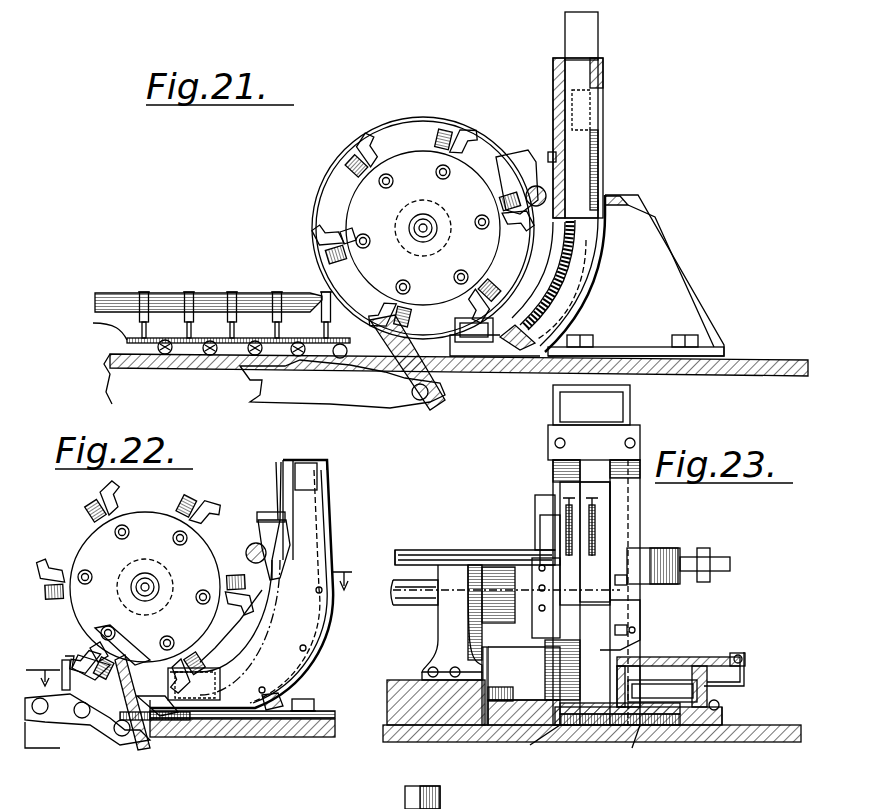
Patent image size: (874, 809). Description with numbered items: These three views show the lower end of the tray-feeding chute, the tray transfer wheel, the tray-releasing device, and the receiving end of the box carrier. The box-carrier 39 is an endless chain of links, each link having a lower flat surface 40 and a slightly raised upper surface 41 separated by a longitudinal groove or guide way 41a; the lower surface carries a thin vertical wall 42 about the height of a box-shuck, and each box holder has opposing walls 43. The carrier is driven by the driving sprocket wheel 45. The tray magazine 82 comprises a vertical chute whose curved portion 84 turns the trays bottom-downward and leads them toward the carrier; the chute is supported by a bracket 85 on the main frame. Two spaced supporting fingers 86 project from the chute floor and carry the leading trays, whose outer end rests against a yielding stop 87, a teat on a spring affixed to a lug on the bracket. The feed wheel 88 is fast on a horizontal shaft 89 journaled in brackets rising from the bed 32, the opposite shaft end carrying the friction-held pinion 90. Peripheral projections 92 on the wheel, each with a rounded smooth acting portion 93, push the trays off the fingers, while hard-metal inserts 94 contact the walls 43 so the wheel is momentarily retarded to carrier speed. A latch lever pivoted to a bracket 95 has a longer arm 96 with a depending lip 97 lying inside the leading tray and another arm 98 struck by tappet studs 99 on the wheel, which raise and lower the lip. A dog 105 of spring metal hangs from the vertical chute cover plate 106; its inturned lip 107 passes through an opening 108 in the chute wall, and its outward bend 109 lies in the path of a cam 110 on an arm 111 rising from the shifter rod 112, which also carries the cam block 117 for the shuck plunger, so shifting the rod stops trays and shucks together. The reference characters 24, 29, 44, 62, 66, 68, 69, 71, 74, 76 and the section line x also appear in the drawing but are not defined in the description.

In FIG. 22, the direction arrow 24 is at (194, 617).
In FIG. 23, the base block 29 is at (569, 725).
In FIG. 21, the bed 32 is at (108, 355).
In FIG. 22, the bed 32 is at (300, 737).
In FIG. 23, the bed 32 is at (415, 742).
In FIG. 21, the box-carrier 39 is at (108, 326).
In FIG. 22, the box-carrier 39 is at (72, 712).
In FIG. 23, the lower flat horizontal surface 40 is at (668, 725).
In FIG. 23, the upper flat horizontal surface 41 is at (578, 725).
In FIG. 21, the longitudinal groove or guide way 41a is at (135, 337).
In FIG. 21, the vertical wall 42 is at (228, 320).
In FIG. 22, the vertical wall 42 is at (162, 720).
In FIG. 21, the walls of the box holder 43 is at (186, 293).
In FIG. 22, the walls of the box holder 43 is at (170, 720).
In FIG. 23, the walls of the box holder 43 is at (560, 670).
In FIG. 21, the roller 44 is at (272, 320).
In FIG. 21, the driving sprocket wheel 45 is at (342, 384).
In FIG. 22, the driving sprocket wheel 45 is at (78, 745).
In FIG. 23, the strip 62 is at (622, 725).
In FIG. 23, the block 66 is at (660, 672).
In FIG. 23, the plate 68 is at (715, 725).
In FIG. 23, the base member 69 is at (712, 698).
In FIG. 23, the screw 71 is at (748, 660).
In FIG. 23, the plate 74 is at (672, 658).
In FIG. 23, the bracket 76 is at (745, 655).
In FIG. 21, the tray magazine 82 is at (604, 72).
In FIG. 22, the tray magazine 82 is at (335, 450).
In FIG. 23, the tray magazine 82 is at (642, 440).
In FIG. 21, the curved portion of chute 84 is at (590, 295).
In FIG. 22, the curved portion of chute 84 is at (303, 690).
In FIG. 21, the bracket 85 is at (648, 220).
In FIG. 21, the supporting fingers 86 is at (422, 400).
In FIG. 22, the supporting fingers 86 is at (128, 755).
In FIG. 21, the yielding stop 87 is at (575, 325).
In FIG. 22, the yielding stop 87 is at (145, 690).
In FIG. 21, the feed wheel 88 is at (423, 228).
In FIG. 22, the feed wheel 88 is at (145, 587).
In FIG. 23, the feed wheel 88 is at (560, 490).
In FIG. 21, the horizontal shaft 89 is at (425, 235).
In FIG. 22, the horizontal shaft 89 is at (150, 595).
In FIG. 23, the horizontal shaft 89 is at (412, 600).
In FIG. 23, the pinion 90 is at (468, 622).
In FIG. 21, the peripheral projections 92 is at (340, 156).
In FIG. 22, the peripheral projections 92 is at (226, 494).
In FIG. 21, the rounded acting portion 93 is at (365, 135).
In FIG. 21, the inserts 94 is at (330, 200).
In FIG. 22, the inserts 94 is at (85, 540).
In FIG. 23, the inserts 94 is at (535, 562).
In FIG. 22, the bracket 95 is at (105, 690).
In FIG. 22, the longer arm of latch lever 96 is at (215, 656).
In FIG. 22, the depending lip 97 is at (235, 685).
In FIG. 22, the other arm of latch lever 98 is at (122, 645).
In FIG. 21, the tappet studs 99 is at (342, 234).
In FIG. 22, the tappet studs 99 is at (90, 626).
In FIG. 23, the tappet studs 99 is at (628, 560).
In FIG. 21, the dog 105 is at (575, 108).
In FIG. 22, the dog 105 is at (300, 475).
In FIG. 23, the dog 105 is at (597, 532).
In FIG. 21, the vertical chute cover plate 106 is at (585, 65).
In FIG. 23, the vertical chute cover plate 106 is at (553, 468).
In FIG. 21, the inturned lip 107 is at (623, 212).
In FIG. 23, the inturned lip 107 is at (680, 530).
In FIG. 21, the opening 108 is at (575, 197).
In FIG. 22, the opening 108 is at (290, 558).
In FIG. 23, the opening 108 is at (648, 600).
In FIG. 21, the outward bend of strip 109 is at (580, 136).
In FIG. 22, the outward bend of strip 109 is at (305, 500).
In FIG. 21, the cam 110 is at (560, 157).
In FIG. 22, the cam 110 is at (290, 520).
In FIG. 23, the cam 110 is at (548, 518).
In FIG. 21, the arm 111 is at (530, 158).
In FIG. 22, the arm 111 is at (260, 520).
In FIG. 23, the arm 111 is at (548, 535).
In FIG. 21, the shifter rod 112 is at (534, 208).
In FIG. 22, the shifter rod 112 is at (248, 552).
In FIG. 23, the shifter rod 112 is at (722, 555).
In FIG. 23, the cam block 117 is at (708, 549).
In FIG. 23, the section line x is at (630, 745).